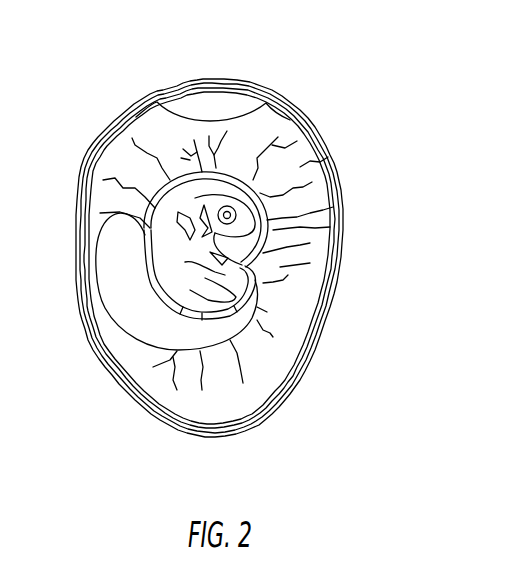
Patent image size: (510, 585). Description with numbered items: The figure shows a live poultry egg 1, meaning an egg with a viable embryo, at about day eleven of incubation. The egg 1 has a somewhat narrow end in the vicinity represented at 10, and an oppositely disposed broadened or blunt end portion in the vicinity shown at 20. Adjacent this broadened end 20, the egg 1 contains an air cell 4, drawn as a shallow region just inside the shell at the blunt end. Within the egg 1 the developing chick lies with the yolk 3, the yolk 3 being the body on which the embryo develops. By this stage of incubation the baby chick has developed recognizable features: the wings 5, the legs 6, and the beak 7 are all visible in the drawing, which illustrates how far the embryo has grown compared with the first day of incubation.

The live egg 1 is at (335, 460).
The yolk 3 is at (319, 149).
The air cell 4 is at (225, 98).
The wings 5 is at (200, 240).
The legs 6 is at (200, 266).
The beak 7 is at (235, 236).
The narrow end 10 is at (212, 440).
The broadened end 20 is at (208, 79).